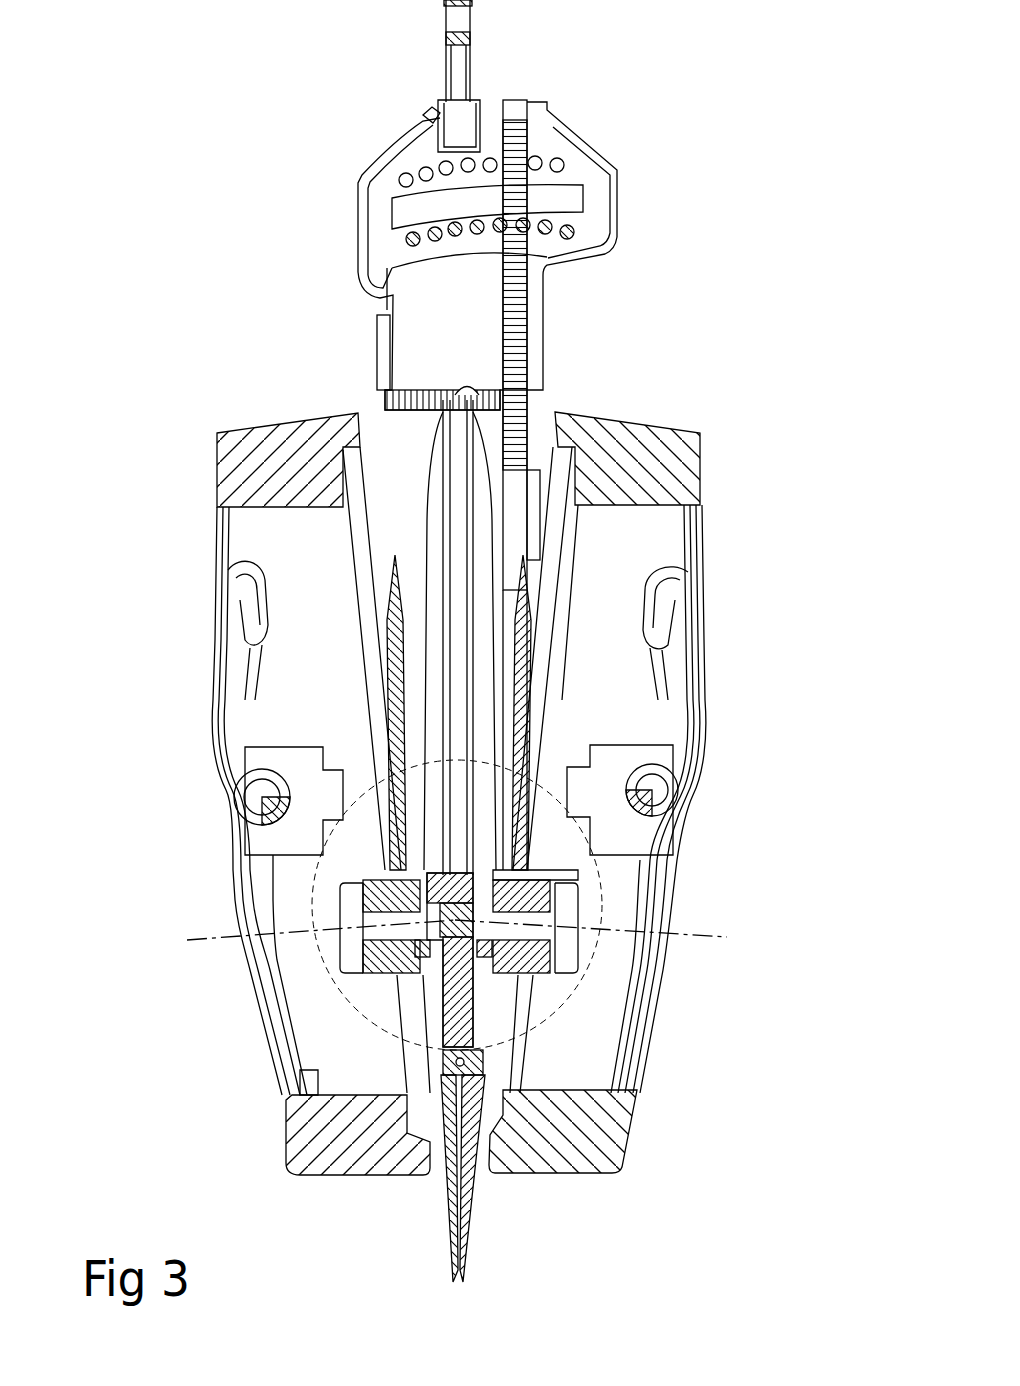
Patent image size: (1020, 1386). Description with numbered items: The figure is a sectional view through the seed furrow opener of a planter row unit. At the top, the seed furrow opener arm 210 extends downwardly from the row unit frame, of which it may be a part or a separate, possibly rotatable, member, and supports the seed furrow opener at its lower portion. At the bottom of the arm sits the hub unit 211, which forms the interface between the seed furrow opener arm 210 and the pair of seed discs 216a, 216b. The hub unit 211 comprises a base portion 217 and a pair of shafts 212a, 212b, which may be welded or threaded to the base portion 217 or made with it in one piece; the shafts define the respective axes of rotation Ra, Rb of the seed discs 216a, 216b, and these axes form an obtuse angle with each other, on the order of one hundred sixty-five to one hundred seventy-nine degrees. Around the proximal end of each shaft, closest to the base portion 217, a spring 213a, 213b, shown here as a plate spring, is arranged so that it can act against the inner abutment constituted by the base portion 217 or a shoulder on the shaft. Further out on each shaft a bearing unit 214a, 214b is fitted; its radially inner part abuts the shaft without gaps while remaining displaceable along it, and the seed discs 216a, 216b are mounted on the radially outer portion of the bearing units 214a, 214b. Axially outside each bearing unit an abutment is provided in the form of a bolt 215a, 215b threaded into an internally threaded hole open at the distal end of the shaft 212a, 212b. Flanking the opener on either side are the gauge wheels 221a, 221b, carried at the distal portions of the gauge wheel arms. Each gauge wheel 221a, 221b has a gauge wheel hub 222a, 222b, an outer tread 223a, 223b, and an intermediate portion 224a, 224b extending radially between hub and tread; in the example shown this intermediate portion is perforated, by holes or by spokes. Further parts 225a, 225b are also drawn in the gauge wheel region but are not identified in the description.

The seed furrow opener arm 210 is at (455, 997).
The hub unit 211 is at (552, 860).
The shaft 212a is at (383, 907).
The shaft 212b is at (505, 963).
The spring 213a is at (383, 960).
The spring 213b is at (517, 977).
The bearing unit 214a is at (430, 952).
The bearing unit 214b is at (530, 897).
The bolt 215a is at (343, 917).
The bolt 215b is at (500, 940).
The seed disc 216a is at (450, 1198).
The seed disc 216b is at (468, 1212).
The base portion 217 is at (470, 915).
The gauge wheel 221a is at (230, 487).
The gauge wheel 221b is at (677, 479).
The gauge wheel hub 222a is at (208, 775).
The gauge wheel hub 222b is at (716, 763).
The tread 223a is at (258, 425).
The tread 223b is at (643, 413).
The intermediate portion 224a is at (193, 602).
The intermediate portion 224b is at (716, 603).
The first flexible arm 225a is at (222, 667).
The second flexible arm 225b is at (688, 673).
The axis of rotation Ra is at (213, 937).
The axis of rotation Rb is at (693, 938).